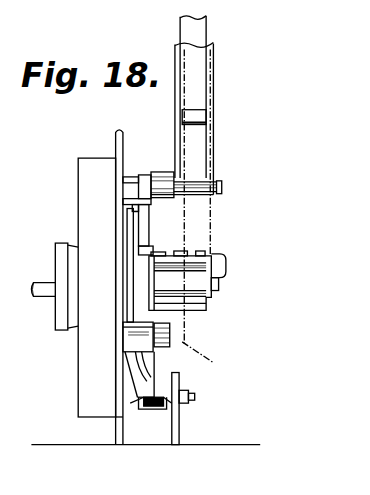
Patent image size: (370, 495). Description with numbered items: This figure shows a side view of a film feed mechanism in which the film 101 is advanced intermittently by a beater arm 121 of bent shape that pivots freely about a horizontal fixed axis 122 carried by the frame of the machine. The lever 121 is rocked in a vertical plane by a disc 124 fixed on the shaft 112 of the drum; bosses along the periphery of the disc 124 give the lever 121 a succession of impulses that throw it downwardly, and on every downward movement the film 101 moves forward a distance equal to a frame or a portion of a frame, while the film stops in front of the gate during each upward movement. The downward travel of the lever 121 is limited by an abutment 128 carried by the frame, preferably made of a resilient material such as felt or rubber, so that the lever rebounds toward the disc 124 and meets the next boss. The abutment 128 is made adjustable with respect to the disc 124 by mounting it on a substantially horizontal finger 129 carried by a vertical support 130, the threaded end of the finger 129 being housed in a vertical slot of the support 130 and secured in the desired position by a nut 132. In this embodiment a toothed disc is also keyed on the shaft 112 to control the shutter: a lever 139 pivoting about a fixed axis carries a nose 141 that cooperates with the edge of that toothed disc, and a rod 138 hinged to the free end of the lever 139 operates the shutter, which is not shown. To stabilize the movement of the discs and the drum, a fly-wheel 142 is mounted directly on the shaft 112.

The film 101 is at (208, 212).
The shaft 112 is at (52, 290).
The beater arm 121 is at (153, 363).
The horizontal fixed axis 122 is at (169, 335).
The disc 124 is at (135, 217).
The abutment 128 is at (121, 419).
The horizontal finger 129 is at (155, 408).
The vertical support 130 is at (178, 420).
The nut 132 is at (192, 397).
The rod 138 is at (197, 135).
The lever 139 is at (158, 169).
The nose 141 is at (143, 201).
The fly-wheel 142 is at (97, 381).